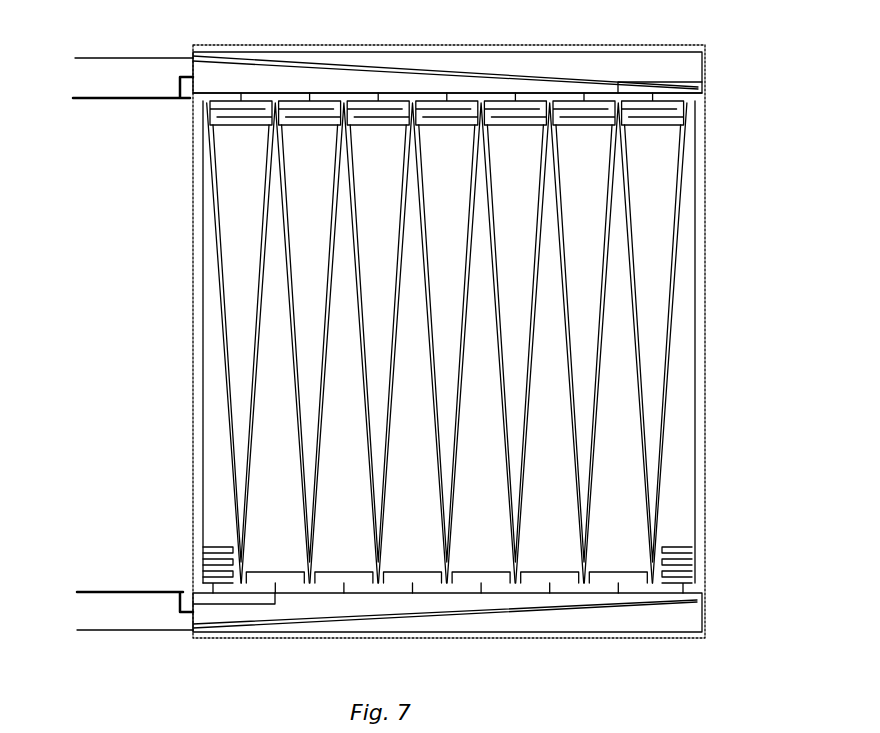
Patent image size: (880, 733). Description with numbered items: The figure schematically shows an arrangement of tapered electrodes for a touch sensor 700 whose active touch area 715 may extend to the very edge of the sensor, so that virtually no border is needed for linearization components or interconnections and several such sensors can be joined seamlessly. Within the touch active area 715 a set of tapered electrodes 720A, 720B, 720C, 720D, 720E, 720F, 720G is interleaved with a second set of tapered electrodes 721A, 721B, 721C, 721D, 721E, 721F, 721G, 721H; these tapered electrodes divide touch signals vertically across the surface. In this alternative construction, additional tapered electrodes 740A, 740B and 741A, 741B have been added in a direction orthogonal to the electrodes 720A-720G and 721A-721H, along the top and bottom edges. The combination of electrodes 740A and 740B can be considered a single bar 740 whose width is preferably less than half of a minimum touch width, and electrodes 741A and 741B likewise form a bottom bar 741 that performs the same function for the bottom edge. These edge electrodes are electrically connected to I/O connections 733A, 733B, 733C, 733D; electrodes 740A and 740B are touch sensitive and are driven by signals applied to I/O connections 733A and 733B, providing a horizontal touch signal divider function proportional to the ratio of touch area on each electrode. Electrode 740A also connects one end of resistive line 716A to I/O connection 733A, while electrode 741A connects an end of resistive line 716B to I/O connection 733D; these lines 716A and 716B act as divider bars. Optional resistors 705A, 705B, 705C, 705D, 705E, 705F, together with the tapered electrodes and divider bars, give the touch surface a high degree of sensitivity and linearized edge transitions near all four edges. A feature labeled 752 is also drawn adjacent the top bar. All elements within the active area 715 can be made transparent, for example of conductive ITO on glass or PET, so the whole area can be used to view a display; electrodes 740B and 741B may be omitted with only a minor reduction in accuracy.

The sensor 700 is at (245, 31).
The resistor 705A is at (207, 110).
The resistor 705B is at (288, 108).
The resistor 705C is at (380, 108).
The resistor 705D is at (527, 106).
The resistor 705E is at (602, 106).
The resistor 705F is at (683, 115).
The touch active area 715 is at (708, 262).
The resistive line 716A is at (618, 97).
The resistive line 716B is at (310, 594).
The tapered electrode 720A is at (235, 372).
The tapered electrode 720B is at (300, 355).
The tapered electrode 720C is at (368, 318).
The tapered electrode 720D is at (437, 292).
The tapered electrode 720E is at (517, 320).
The tapered electrode 720F is at (590, 352).
The tapered electrode 720G is at (658, 367).
The tapered electrode 721A is at (210, 392).
The tapered electrode 721B is at (268, 417).
The tapered electrode 721C is at (335, 430).
The tapered electrode 721D is at (410, 470).
The tapered electrode 721E is at (480, 487).
The tapered electrode 721F is at (553, 442).
The tapered electrode 721G is at (620, 415).
The tapered electrode 721H is at (685, 395).
The I/O connection 733A is at (75, 58).
The I/O connection 733B is at (73, 98).
The I/O connection 733C is at (77, 592).
The I/O connection 733D is at (77, 630).
The bar 740 is at (712, 55).
The tapered electrode 740A is at (503, 66).
The tapered electrode 740B is at (353, 78).
The bar 741 is at (712, 593).
The tapered electrode 741A is at (553, 623).
The tapered electrode 741B is at (457, 603).
The bus bar edge 752 is at (704, 90).